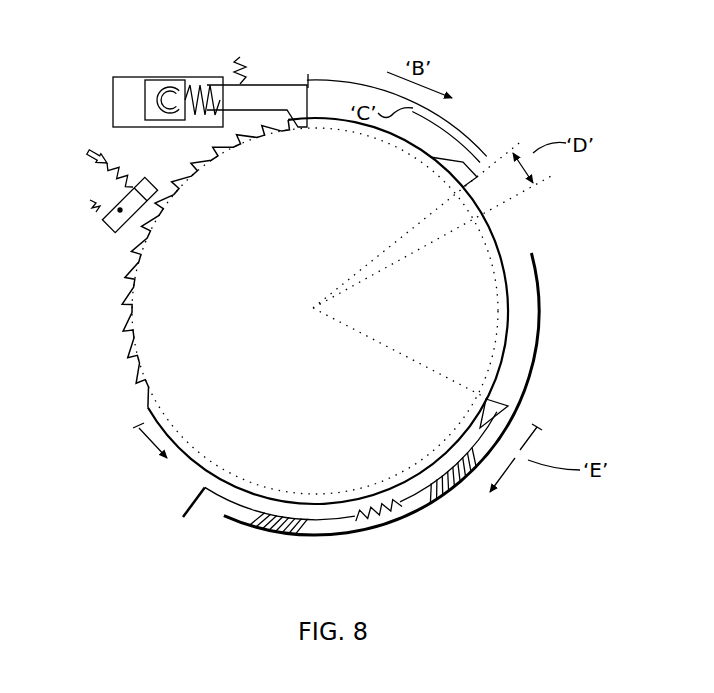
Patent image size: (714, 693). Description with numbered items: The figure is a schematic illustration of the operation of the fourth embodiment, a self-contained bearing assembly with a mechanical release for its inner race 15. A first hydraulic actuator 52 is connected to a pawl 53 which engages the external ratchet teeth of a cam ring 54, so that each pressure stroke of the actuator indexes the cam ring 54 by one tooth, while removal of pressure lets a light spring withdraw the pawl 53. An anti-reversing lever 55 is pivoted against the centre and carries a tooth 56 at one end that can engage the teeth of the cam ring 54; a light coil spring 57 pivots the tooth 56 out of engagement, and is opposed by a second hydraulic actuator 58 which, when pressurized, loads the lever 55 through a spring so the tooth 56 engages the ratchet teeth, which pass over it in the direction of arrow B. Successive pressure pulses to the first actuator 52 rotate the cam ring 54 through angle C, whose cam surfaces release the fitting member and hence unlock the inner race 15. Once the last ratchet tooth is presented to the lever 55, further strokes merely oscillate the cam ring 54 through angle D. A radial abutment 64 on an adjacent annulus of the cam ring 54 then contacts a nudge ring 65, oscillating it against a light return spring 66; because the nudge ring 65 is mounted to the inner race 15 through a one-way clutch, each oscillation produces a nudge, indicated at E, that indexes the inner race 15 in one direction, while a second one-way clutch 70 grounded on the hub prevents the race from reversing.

The inner race 15 is at (540, 295).
The first hydraulic actuator 52 is at (112, 97).
The pawl 53 is at (267, 93).
The cam ring 54 is at (500, 233).
The anti-reversing lever 55 is at (113, 240).
The tooth 56 is at (140, 193).
The light coil spring 57 is at (108, 212).
The second hydraulic actuator 58 is at (115, 163).
The radial abutment 64 is at (433, 140).
The nudge ring 65 is at (512, 407).
The light return spring 66 is at (383, 523).
The second one-way clutch 70 is at (256, 538).